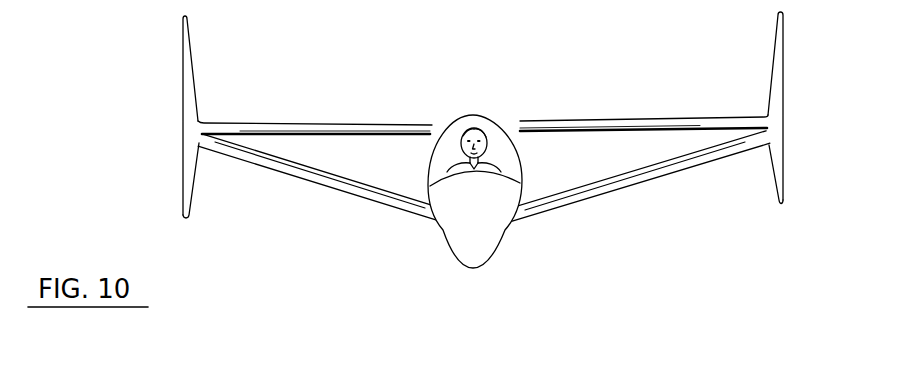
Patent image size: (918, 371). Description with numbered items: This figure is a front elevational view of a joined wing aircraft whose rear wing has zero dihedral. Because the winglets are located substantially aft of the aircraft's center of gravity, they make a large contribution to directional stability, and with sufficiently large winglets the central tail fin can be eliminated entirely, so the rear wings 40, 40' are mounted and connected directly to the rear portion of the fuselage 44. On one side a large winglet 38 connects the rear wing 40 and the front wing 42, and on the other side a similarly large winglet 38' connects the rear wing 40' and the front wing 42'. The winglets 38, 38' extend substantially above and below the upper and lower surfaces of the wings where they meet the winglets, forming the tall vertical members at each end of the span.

The winglet 38 is at (797, 108).
The winglet 38' is at (162, 117).
The rear wing 40 is at (644, 96).
The rear wing 40' is at (315, 98).
The front wing 42 is at (635, 180).
The front wing 42' is at (324, 188).
The fuselage 44 is at (463, 237).